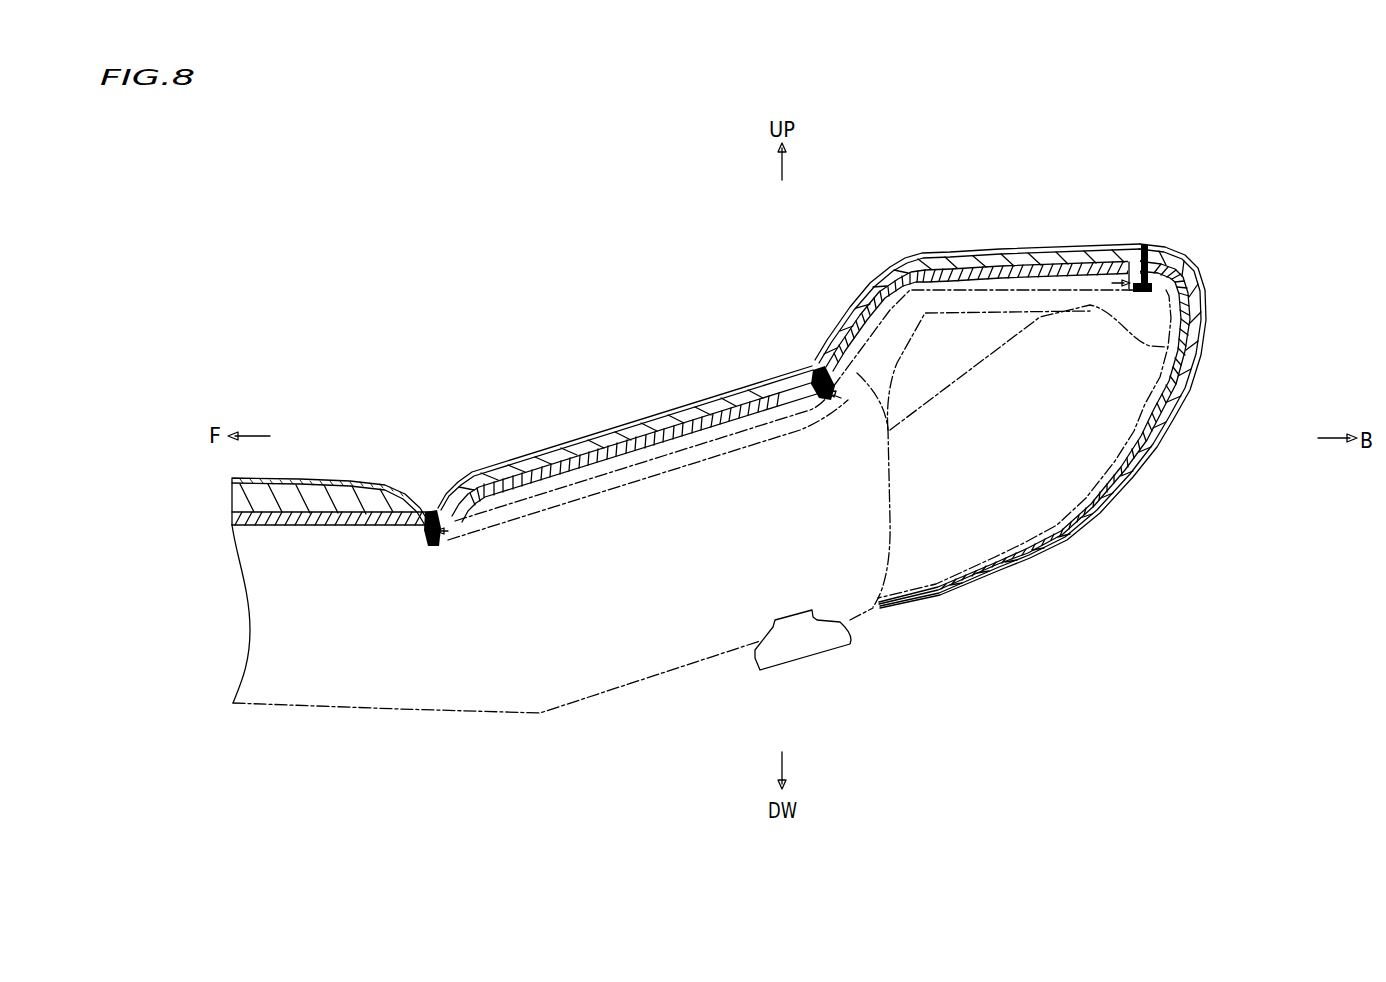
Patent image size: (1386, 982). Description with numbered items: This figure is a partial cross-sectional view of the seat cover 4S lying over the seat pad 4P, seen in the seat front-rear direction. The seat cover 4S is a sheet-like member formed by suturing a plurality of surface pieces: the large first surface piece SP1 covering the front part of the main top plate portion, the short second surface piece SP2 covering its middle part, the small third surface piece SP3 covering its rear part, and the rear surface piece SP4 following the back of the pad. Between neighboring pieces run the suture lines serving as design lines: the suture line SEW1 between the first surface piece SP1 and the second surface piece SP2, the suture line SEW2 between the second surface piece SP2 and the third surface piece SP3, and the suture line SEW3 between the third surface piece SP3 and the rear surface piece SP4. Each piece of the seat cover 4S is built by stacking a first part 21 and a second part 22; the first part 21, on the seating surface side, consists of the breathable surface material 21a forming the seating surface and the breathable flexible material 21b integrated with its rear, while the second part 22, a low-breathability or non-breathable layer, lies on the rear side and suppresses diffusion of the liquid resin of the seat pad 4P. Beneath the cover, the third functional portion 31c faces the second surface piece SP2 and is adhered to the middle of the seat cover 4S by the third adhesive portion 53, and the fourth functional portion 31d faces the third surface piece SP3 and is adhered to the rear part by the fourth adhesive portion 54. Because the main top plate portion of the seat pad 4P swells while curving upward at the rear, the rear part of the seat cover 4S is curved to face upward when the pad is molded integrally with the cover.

The seat pad 4P is at (495, 636).
The seat cover 4S is at (1189, 253).
The first part 21 is at (781, 442).
The surface material 21a is at (383, 486).
The flexible material 21b is at (420, 594).
The second part 22 is at (270, 521).
The third adhesive portion 53 is at (718, 436).
The fourth adhesive portion 54 is at (895, 310).
The third functional portion 31c is at (771, 434).
The fourth functional portion 31d is at (857, 373).
The first surface piece SP1 is at (339, 479).
The second surface piece SP2 is at (626, 420).
The third surface piece SP3 is at (1007, 246).
The rear surface piece SP4 is at (1157, 457).
The suture line SEW1 is at (467, 475).
The suture line SEW2 is at (766, 378).
The suture line SEW3 is at (1108, 249).